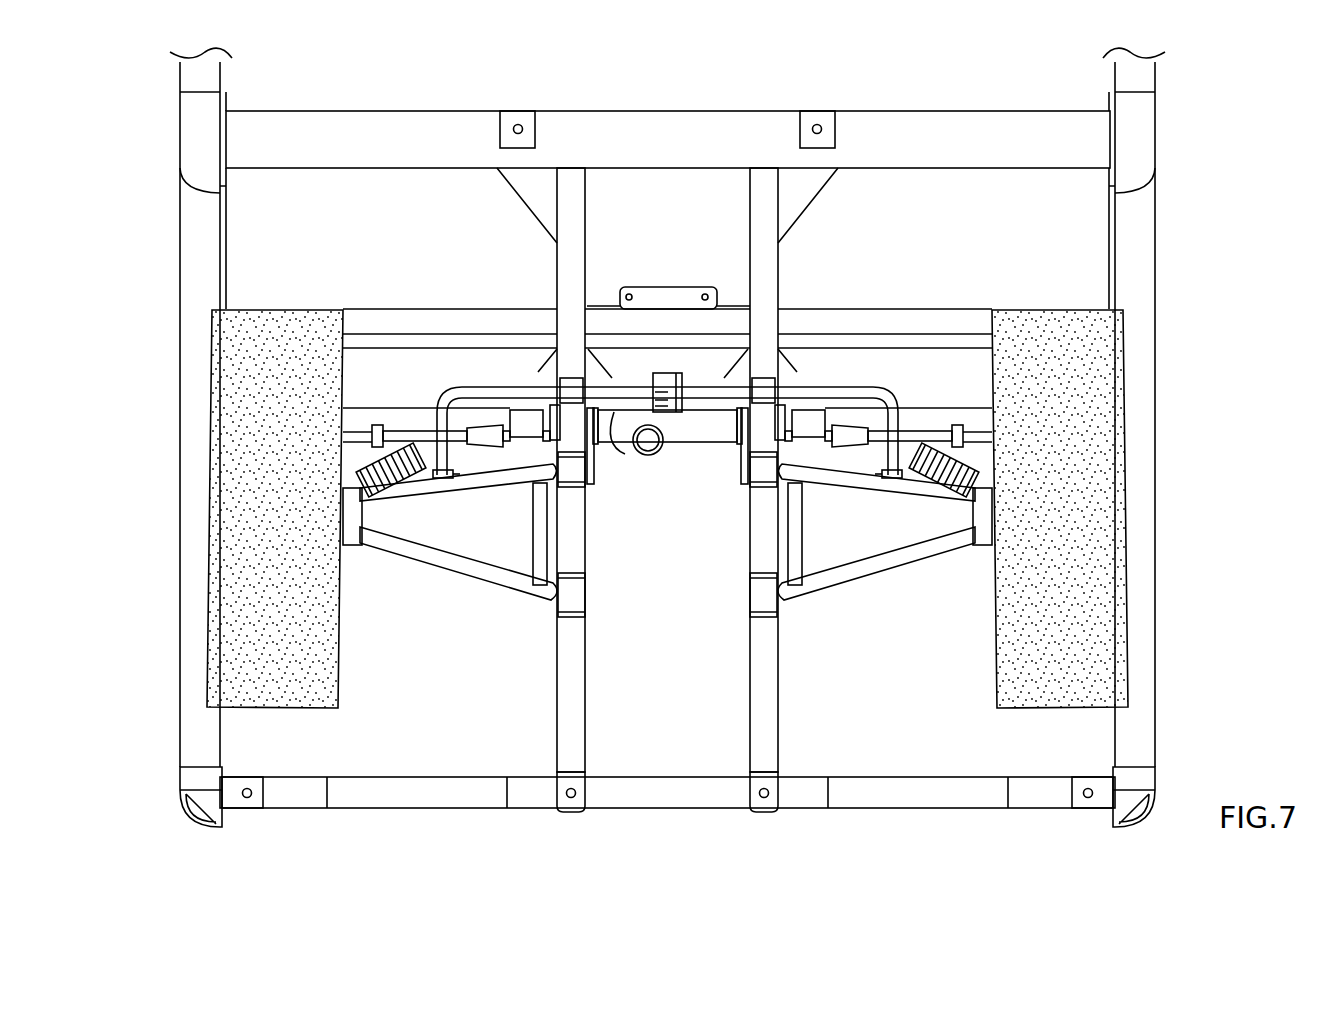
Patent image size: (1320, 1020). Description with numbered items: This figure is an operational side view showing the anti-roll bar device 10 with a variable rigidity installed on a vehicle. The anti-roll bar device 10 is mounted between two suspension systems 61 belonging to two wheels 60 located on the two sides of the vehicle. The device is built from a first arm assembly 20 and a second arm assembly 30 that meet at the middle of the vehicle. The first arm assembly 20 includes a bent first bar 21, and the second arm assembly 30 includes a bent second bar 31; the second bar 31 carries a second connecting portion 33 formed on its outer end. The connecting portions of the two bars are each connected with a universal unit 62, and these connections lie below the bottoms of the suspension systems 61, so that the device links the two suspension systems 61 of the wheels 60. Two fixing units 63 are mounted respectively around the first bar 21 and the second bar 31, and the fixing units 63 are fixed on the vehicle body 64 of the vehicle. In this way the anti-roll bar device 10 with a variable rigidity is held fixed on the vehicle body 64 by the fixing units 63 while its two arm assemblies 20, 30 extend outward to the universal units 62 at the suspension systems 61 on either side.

The anti-roll bar device with a variable rigidity 10 is at (665, 360).
The first arm assembly 20 is at (534, 354).
The first bar 21 is at (483, 390).
The second arm assembly 30 is at (799, 388).
The second bar 31 is at (852, 387).
The second connecting portion 33 is at (900, 462).
The wheel 60 is at (252, 413).
The suspension system 61 is at (383, 488).
The universal unit 62 is at (411, 455).
The fixing unit 63 is at (762, 380).
The vehicle body 64 is at (897, 128).